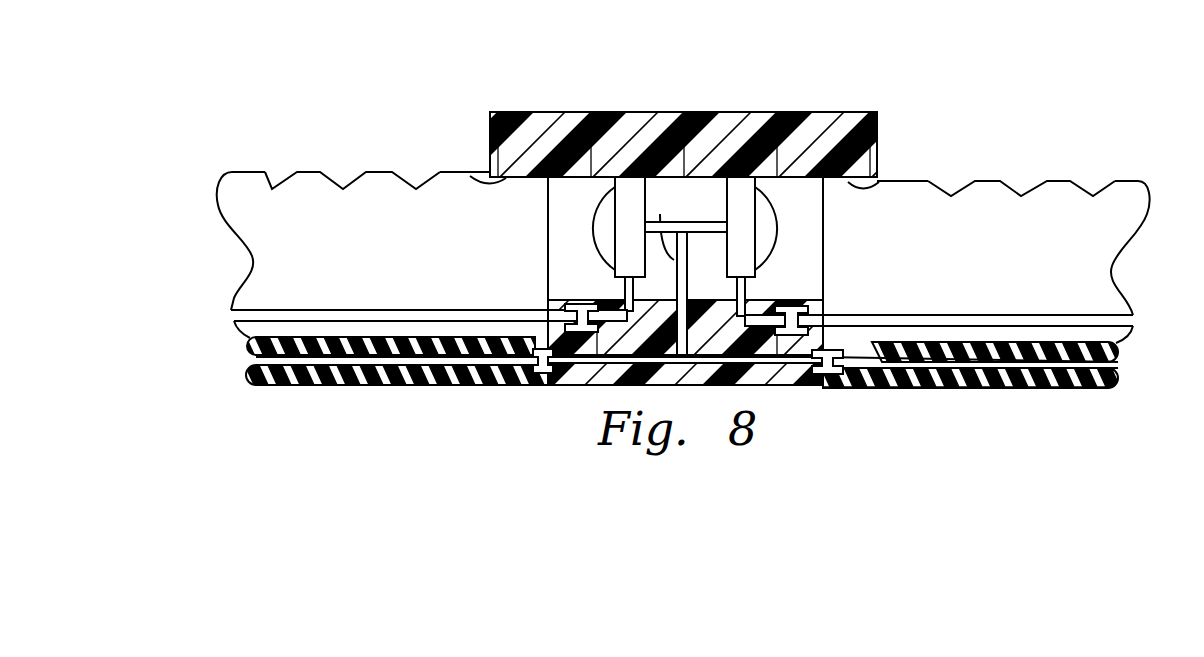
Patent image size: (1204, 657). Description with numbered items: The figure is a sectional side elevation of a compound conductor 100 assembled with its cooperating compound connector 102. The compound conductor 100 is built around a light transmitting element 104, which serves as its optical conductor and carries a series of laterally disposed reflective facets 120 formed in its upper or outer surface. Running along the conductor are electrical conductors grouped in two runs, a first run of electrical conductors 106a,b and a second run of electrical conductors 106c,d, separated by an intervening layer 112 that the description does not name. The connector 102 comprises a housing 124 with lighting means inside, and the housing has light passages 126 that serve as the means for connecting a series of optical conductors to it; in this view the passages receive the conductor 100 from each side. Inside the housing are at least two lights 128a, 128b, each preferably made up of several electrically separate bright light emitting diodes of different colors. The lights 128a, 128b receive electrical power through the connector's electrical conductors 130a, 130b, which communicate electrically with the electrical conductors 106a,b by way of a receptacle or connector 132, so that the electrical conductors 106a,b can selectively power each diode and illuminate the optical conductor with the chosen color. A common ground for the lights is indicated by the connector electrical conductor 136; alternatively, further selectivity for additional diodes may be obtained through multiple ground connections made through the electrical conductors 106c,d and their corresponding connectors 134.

The compound conductor 100 is at (335, 101).
The compound connector 102 is at (681, 68).
The light transmitting element 104 is at (1022, 267).
The electrical conductors 106a,b is at (230, 306).
The electrical conductors 106c,d is at (240, 372).
The dielectric layer 112 is at (400, 387).
The reflective facets 120 is at (420, 176).
The housing 124 is at (732, 112).
The light passages 126 is at (484, 178).
The light 128a is at (592, 229).
The light 128b is at (778, 231).
The electrical conductor 130a is at (626, 295).
The electrical conductor 130b is at (748, 298).
The receptacle or connector 132 is at (548, 303).
The connectors 134 is at (520, 376).
The connector electrical conductor 136 is at (716, 223).